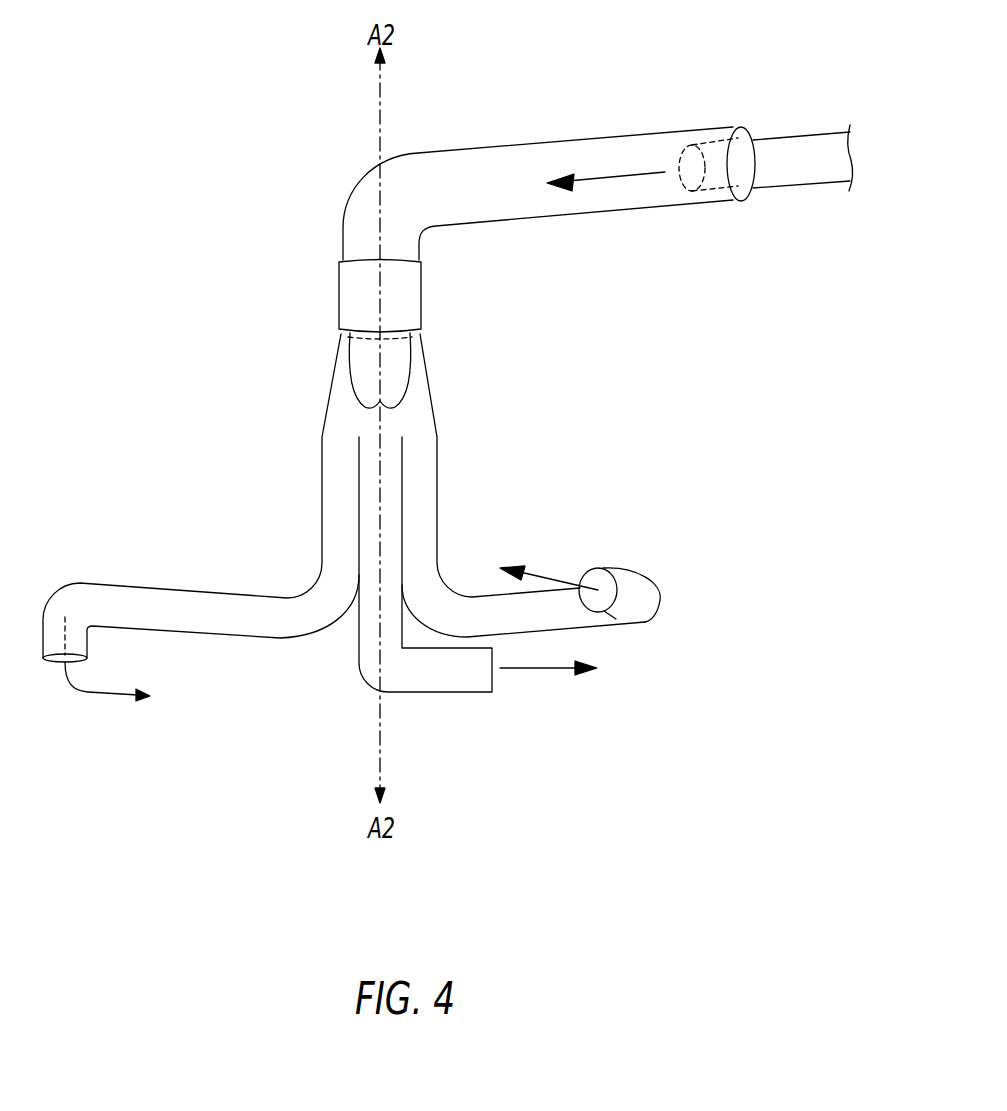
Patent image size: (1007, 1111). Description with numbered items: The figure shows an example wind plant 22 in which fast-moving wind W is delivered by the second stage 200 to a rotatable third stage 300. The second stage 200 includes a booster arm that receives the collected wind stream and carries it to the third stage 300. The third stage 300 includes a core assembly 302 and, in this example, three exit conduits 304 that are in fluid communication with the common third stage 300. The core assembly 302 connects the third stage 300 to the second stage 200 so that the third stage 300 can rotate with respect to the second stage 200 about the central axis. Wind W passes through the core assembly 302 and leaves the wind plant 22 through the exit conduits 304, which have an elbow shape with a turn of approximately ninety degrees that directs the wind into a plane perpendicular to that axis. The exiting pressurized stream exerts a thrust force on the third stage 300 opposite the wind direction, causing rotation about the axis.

The wind plant 22 is at (126, 115).
The second stage 200 is at (625, 86).
The third stage 300 is at (270, 301).
The core assembly 302 is at (442, 298).
The exit conduit 304 is at (170, 588).